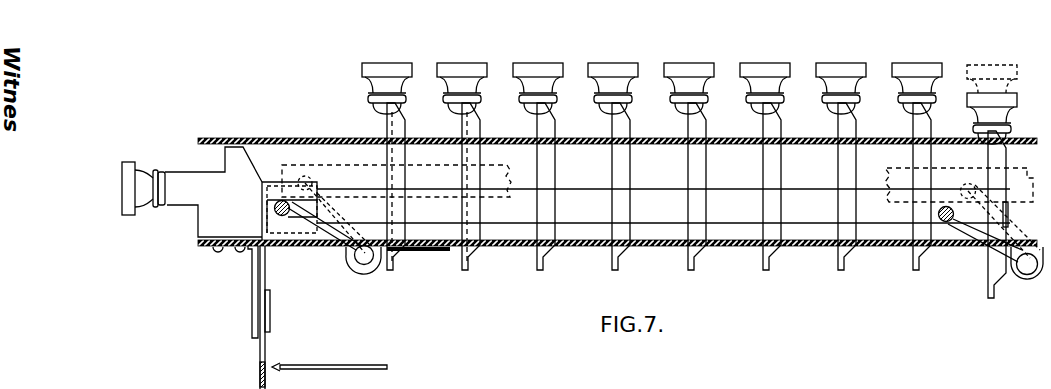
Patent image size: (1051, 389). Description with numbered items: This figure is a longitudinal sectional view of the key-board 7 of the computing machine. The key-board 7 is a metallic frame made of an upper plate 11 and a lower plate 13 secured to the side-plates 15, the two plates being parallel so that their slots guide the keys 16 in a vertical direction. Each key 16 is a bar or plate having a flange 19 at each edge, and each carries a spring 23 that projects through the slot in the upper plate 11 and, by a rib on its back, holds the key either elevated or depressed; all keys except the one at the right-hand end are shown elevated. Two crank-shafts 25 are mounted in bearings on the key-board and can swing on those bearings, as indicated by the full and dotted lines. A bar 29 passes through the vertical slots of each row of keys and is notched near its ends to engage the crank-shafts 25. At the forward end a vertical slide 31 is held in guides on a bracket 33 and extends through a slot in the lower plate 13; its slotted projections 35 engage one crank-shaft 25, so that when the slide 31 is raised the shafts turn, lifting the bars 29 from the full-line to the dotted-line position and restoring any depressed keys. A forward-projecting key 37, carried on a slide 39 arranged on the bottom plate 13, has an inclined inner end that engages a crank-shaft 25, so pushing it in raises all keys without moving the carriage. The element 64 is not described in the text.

The key-board 7 is at (267, 138).
The upper plate 11 is at (338, 138).
The lower plate 13 is at (573, 249).
The side-plates 15 is at (722, 155).
The keys 16 is at (455, 60).
The flange 19 is at (473, 175).
The spring 23 is at (385, 157).
The crank-shafts 25 is at (348, 250).
The bar 29 is at (500, 212).
The vertical slide 31 is at (262, 274).
The bracket 33 is at (256, 308).
The slotted projections 35 is at (270, 222).
The key 37 is at (182, 197).
The slide 39 is at (200, 247).
The scale 64 is at (326, 365).